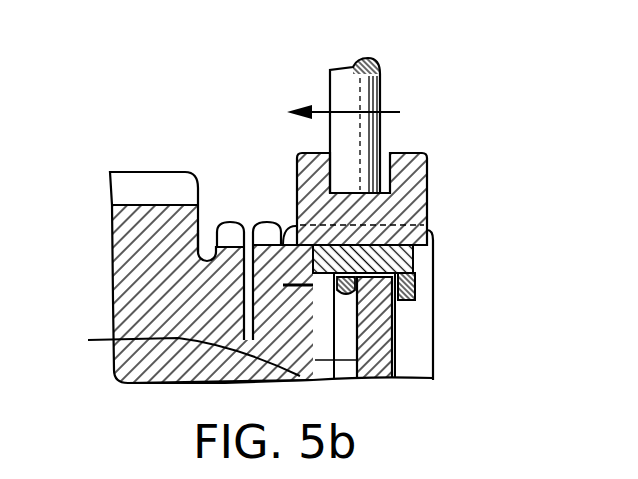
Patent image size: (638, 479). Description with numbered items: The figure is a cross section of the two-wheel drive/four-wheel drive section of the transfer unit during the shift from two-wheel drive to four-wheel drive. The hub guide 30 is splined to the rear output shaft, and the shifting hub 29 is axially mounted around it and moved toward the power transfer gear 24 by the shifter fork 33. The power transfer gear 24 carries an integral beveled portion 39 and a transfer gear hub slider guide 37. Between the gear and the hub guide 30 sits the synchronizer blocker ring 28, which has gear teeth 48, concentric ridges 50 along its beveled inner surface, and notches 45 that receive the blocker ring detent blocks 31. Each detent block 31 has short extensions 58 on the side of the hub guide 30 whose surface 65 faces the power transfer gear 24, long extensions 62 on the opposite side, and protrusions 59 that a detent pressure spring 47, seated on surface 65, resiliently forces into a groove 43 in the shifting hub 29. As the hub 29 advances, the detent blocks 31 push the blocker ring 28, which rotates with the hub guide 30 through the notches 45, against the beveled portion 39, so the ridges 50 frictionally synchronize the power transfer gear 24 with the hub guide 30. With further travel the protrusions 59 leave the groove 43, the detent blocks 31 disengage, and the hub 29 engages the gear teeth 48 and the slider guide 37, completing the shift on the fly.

The power transfer gear 24 is at (130, 230).
The synchronizer blocker ring 28 is at (247, 225).
The shifting hub 29 is at (410, 150).
The hub guide 30 is at (433, 228).
The blocker ring detent blocks 31 is at (340, 292).
The shifter fork 33 is at (385, 75).
The transfer gear hub slider guide 37 is at (205, 261).
The beveled portion 39 is at (222, 383).
The groove 43 is at (300, 237).
The notches 45 is at (417, 268).
The detent pressure spring 47 is at (377, 378).
The gear teeth 48 is at (265, 222).
The ridges 50 is at (175, 352).
The short extensions 58 is at (283, 286).
The protrusions 59 is at (380, 243).
The long extensions 62 is at (418, 292).
The surface 65 is at (297, 384).